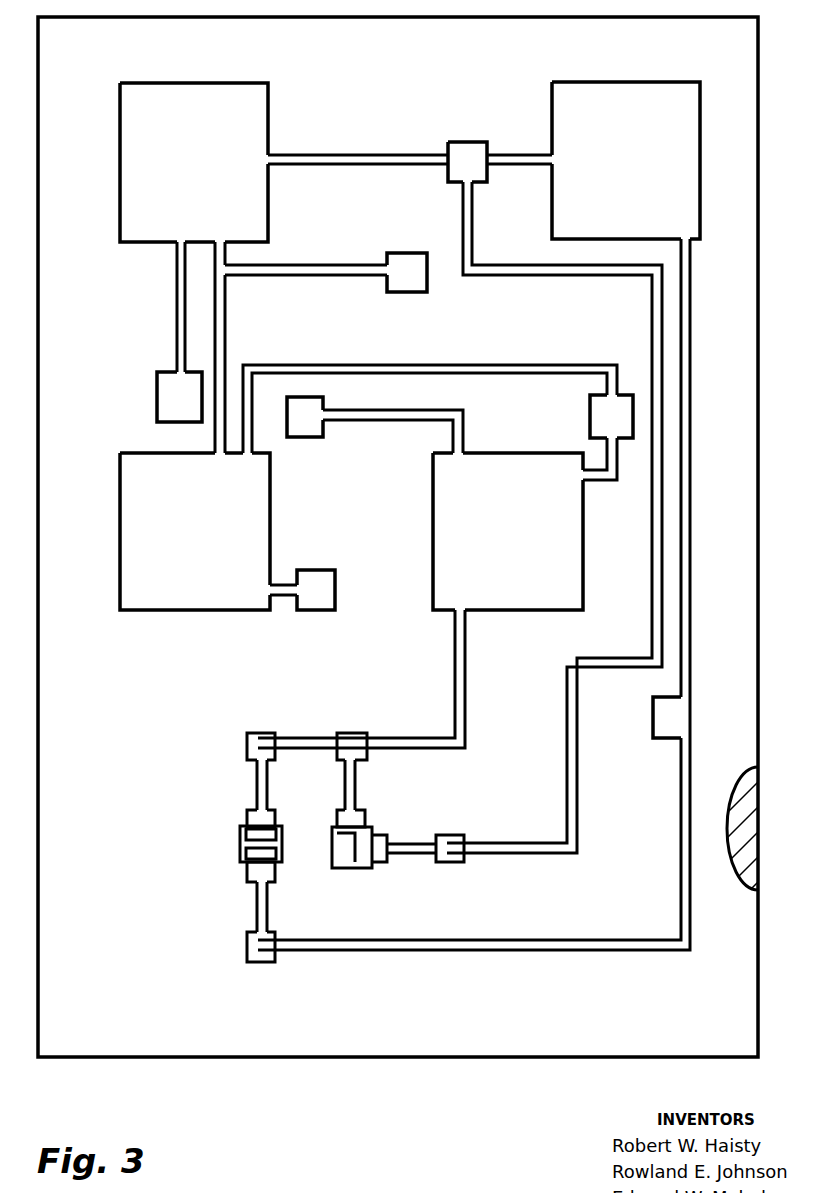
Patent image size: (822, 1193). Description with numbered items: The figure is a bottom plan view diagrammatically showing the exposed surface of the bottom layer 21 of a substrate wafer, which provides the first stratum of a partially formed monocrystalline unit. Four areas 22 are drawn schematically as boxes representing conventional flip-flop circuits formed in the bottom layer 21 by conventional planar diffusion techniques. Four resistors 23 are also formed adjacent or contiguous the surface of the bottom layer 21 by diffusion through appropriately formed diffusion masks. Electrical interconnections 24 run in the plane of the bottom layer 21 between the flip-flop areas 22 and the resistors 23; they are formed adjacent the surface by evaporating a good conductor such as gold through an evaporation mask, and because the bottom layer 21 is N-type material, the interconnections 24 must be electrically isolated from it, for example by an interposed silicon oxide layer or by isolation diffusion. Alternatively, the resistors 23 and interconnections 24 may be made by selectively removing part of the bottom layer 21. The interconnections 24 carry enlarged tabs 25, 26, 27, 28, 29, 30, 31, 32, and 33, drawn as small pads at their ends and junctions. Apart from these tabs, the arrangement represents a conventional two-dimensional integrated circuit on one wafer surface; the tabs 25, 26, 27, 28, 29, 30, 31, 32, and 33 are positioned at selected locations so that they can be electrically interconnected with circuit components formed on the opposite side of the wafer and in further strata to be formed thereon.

The bottom layer 21 is at (750, 800).
The flip-flop circuit area 22 is at (143, 131).
The resistor 23 is at (257, 785).
The electrical interconnection 24 is at (340, 153).
The enlarged tab 25 is at (657, 715).
The enlarged tab 26 is at (338, 850).
The enlarged tab 27 is at (240, 845).
The enlarged tab 28 is at (315, 580).
The enlarged tab 29 is at (600, 420).
The enlarged tab 30 is at (313, 398).
The enlarged tab 31 is at (165, 390).
The enlarged tab 32 is at (403, 262).
The enlarged tab 33 is at (470, 142).